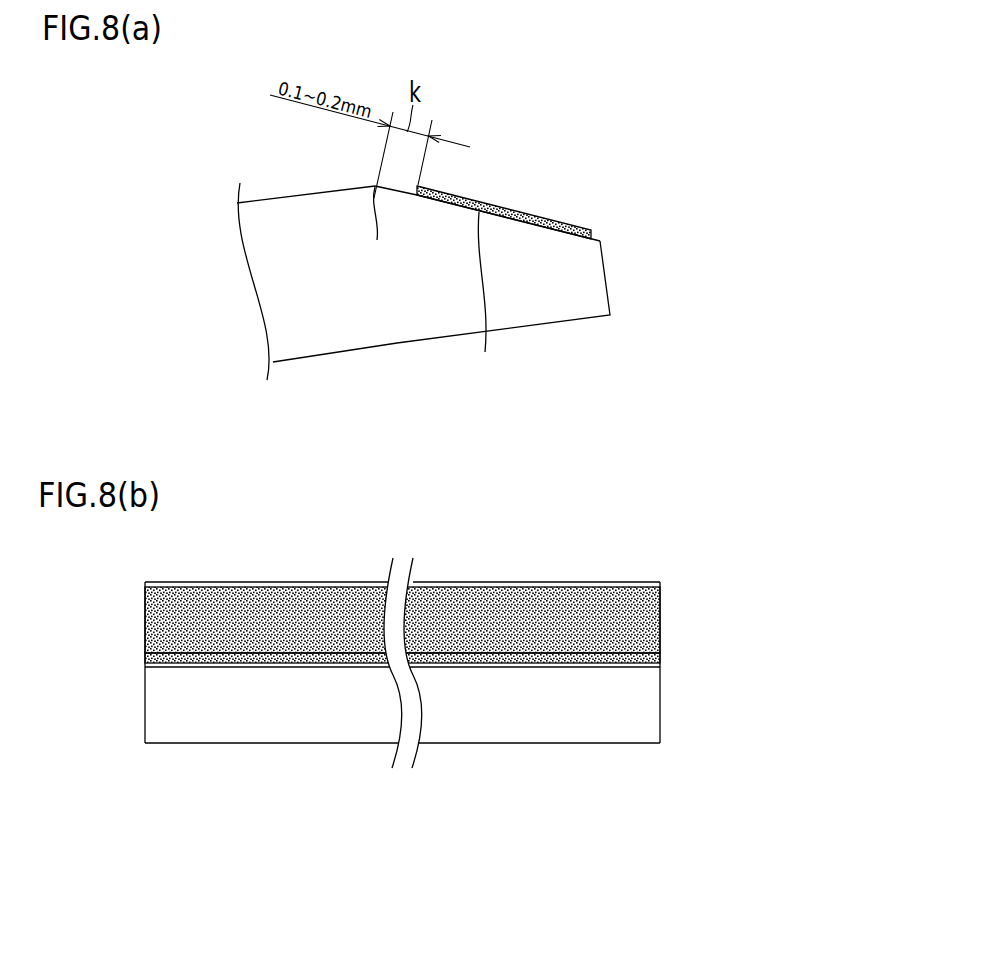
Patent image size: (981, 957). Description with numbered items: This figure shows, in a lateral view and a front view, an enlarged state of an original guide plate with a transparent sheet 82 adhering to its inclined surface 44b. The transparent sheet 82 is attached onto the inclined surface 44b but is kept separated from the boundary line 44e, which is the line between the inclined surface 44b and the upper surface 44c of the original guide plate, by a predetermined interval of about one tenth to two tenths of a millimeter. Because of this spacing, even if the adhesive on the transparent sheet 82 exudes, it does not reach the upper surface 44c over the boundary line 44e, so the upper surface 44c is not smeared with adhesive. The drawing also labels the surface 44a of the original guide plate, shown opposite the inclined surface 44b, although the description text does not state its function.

In FIG. 8A, the bottom surface of guide member 44a is at (578, 320).
In FIG. 8B, the bottom surface of guide member 44a is at (575, 748).
In FIG. 8A, the inclined surface 44b is at (508, 293).
In FIG. 8B, the inclined surface 44b is at (535, 584).
In FIG. 8A, the upper surface 44c is at (288, 197).
In FIG. 8A, the boundary line 44e is at (380, 231).
In FIG. 8B, the boundary line 44e is at (270, 581).
In FIG. 8A, the transparent sheet 82 is at (551, 216).
In FIG. 8B, the transparent sheet 82 is at (660, 615).